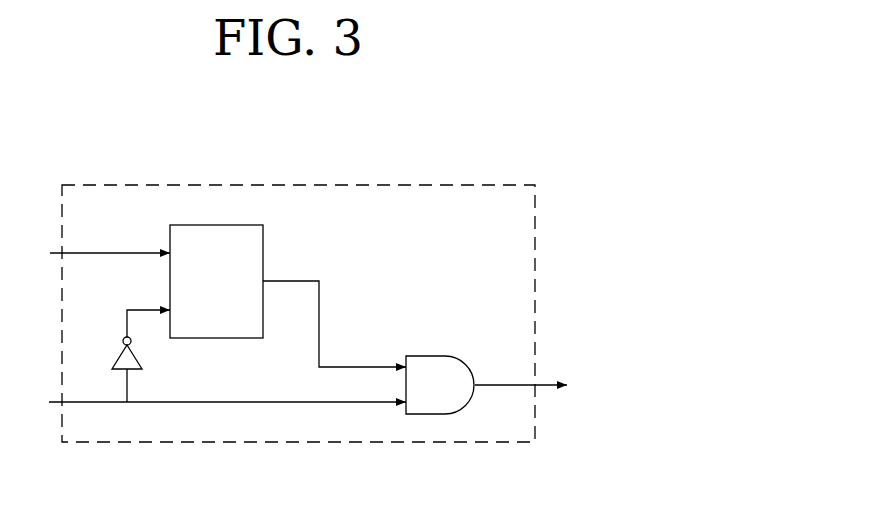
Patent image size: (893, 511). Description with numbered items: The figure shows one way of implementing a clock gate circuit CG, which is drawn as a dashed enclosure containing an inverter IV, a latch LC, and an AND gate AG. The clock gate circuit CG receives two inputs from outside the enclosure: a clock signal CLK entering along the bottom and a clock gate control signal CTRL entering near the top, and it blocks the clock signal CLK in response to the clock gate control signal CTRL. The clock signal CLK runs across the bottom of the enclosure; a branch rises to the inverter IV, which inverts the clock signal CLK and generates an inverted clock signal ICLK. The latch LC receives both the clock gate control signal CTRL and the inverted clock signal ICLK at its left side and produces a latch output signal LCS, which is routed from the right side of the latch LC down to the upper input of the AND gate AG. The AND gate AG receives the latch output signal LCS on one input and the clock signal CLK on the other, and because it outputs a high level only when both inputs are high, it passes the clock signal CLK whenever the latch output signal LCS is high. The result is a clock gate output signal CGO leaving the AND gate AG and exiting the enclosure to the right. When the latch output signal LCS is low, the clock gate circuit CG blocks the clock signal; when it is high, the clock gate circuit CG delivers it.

The clock gate circuit CG is at (449, 185).
The latch LC is at (263, 246).
The inverter IV is at (137, 357).
The AND gate AG is at (425, 356).
The clock gate control signal CTRL is at (110, 241).
The inverted clock signal ICLK is at (139, 311).
The clock signal CLK is at (227, 416).
The latch output signal LCS is at (334, 324).
The clock gate output signal CGO is at (521, 399).